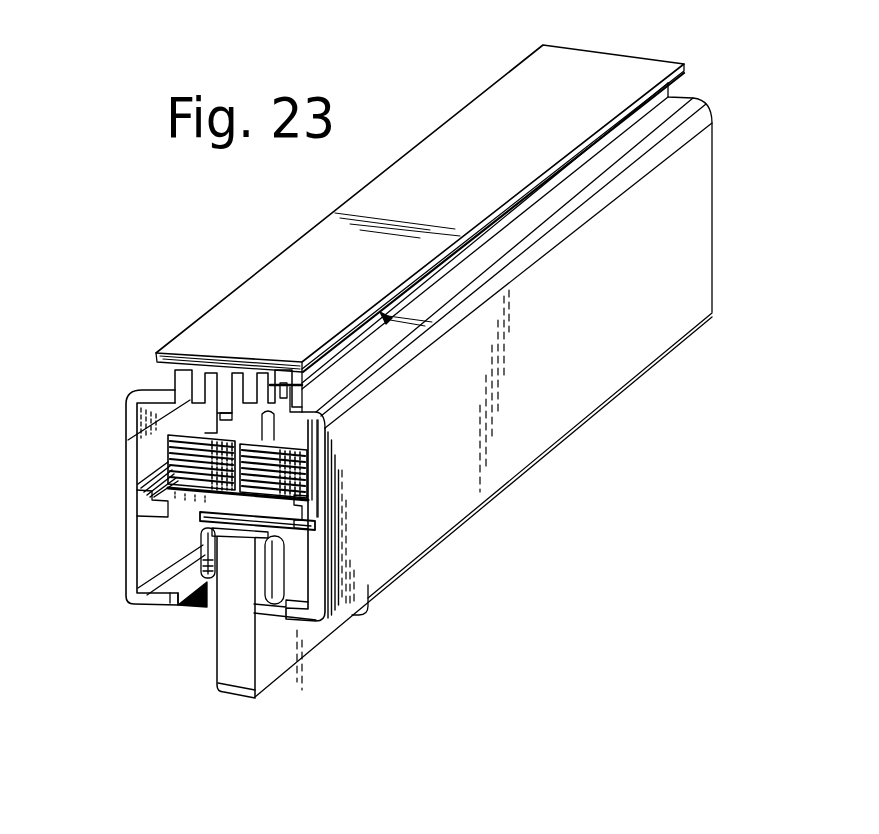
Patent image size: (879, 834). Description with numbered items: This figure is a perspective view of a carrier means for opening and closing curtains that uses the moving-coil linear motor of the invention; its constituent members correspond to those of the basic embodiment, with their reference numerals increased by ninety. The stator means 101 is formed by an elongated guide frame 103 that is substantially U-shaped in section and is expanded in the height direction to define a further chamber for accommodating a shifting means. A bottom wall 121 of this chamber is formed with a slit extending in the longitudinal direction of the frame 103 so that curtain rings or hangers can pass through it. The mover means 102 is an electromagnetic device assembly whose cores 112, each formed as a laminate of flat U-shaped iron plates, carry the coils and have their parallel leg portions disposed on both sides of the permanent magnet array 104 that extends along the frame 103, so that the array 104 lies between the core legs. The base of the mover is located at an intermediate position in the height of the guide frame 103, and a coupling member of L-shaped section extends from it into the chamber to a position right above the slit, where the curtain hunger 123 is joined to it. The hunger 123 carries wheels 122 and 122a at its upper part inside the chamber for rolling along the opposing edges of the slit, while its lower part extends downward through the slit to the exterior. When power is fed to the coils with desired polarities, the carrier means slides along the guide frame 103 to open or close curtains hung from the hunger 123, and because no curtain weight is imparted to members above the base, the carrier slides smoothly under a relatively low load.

The stator means 101 is at (614, 48).
The mover means 102 is at (168, 446).
The guide frame 103 is at (316, 527).
The permanent magnet array 104 is at (215, 415).
The core 112 is at (307, 453).
The bottom wall 121 is at (130, 606).
The wheel 122 is at (180, 600).
The wheel 122a is at (275, 570).
The curtain hunger 123 is at (242, 670).